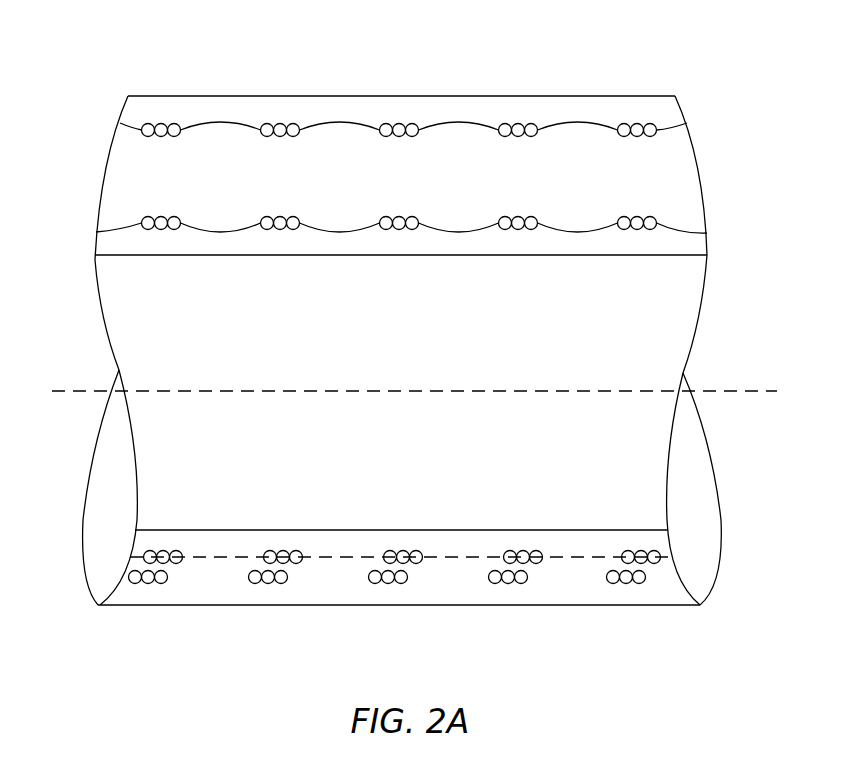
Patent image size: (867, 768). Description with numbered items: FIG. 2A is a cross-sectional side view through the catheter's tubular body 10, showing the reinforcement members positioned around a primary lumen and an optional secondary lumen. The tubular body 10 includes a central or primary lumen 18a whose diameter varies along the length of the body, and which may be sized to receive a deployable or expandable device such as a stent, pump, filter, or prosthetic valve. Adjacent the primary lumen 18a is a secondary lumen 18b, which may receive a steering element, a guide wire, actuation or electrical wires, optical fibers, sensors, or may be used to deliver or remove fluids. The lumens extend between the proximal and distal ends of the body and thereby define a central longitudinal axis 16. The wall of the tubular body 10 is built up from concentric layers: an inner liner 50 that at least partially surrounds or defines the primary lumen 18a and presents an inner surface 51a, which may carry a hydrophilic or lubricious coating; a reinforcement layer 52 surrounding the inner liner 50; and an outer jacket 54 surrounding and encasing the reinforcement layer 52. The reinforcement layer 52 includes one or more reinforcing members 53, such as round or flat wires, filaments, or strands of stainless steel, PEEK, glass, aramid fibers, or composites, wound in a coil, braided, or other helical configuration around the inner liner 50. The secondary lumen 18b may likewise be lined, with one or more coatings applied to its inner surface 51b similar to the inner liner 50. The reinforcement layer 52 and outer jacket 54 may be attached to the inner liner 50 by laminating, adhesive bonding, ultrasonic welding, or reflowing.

The tubular body 10 is at (125, 647).
The central longitudinal axis 16 is at (85, 391).
The primary lumen 18a is at (286, 351).
The secondary lumen 18b is at (343, 189).
The inner liner 50 is at (586, 540).
The inner surface 51a is at (465, 258).
The inner surface 51b is at (197, 124).
The reinforcement layer 52 is at (667, 578).
The reinforcing members 53 is at (300, 552).
The outer jacket 54 is at (207, 102).